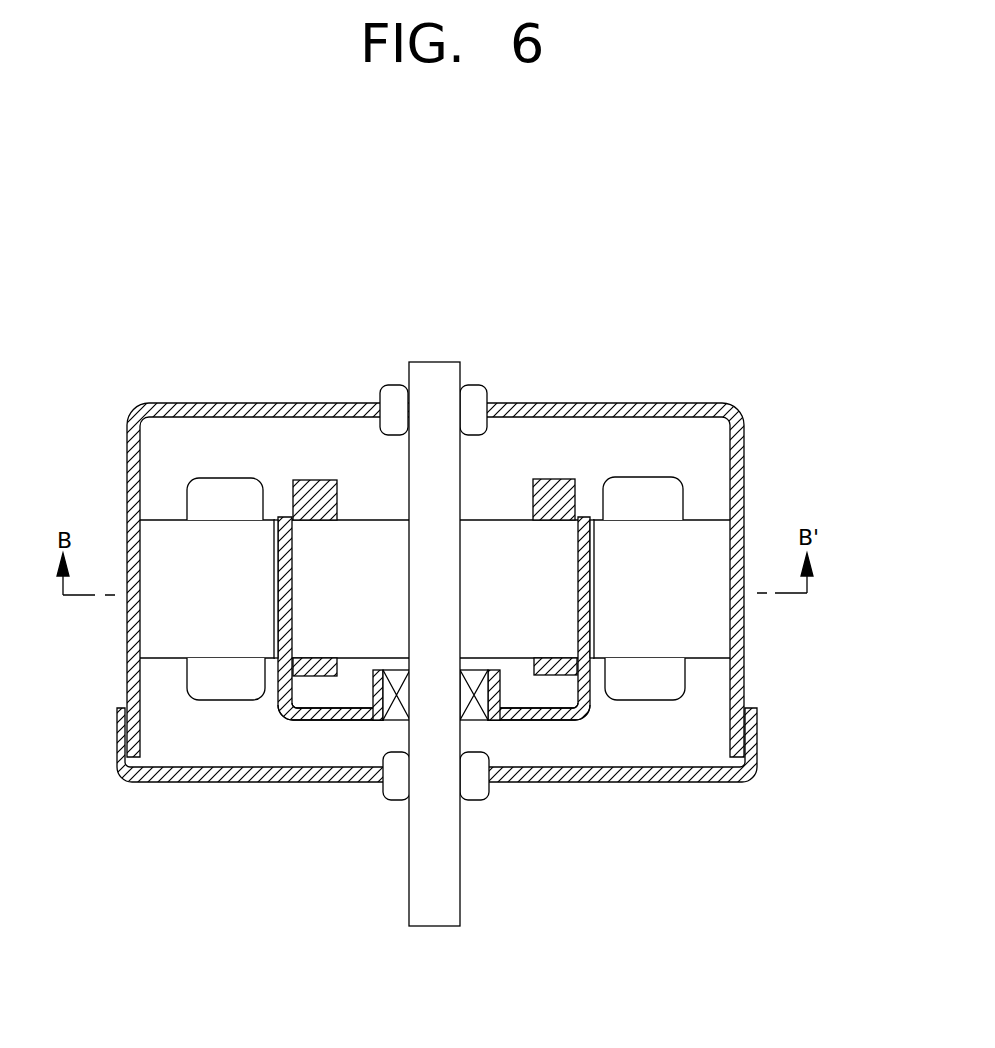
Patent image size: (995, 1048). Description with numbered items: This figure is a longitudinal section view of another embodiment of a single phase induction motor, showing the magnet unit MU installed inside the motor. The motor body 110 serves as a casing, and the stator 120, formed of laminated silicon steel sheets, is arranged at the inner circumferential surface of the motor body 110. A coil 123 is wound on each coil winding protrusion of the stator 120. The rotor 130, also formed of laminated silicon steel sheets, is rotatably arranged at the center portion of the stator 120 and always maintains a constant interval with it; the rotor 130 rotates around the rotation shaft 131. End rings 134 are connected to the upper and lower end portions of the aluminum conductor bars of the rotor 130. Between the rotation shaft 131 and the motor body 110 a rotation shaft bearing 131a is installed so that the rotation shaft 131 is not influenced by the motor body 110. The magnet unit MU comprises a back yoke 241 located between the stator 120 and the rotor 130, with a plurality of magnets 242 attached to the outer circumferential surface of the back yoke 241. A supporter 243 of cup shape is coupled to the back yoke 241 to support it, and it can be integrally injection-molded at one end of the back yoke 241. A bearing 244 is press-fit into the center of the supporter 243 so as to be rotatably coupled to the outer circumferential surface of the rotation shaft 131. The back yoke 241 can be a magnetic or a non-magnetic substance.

The motor body 110 is at (738, 445).
The stator 120 is at (713, 632).
The coil 123 is at (652, 498).
The rotor 130 is at (357, 537).
The rotation shaft 131 is at (430, 905).
The rotation shaft bearing 131a is at (472, 790).
The end ring 134 is at (557, 497).
The back yoke 241 is at (592, 640).
The magnet 242 is at (590, 610).
The supporter 243 is at (592, 700).
The bearing 244 is at (373, 718).
The magnet unit MU is at (573, 735).